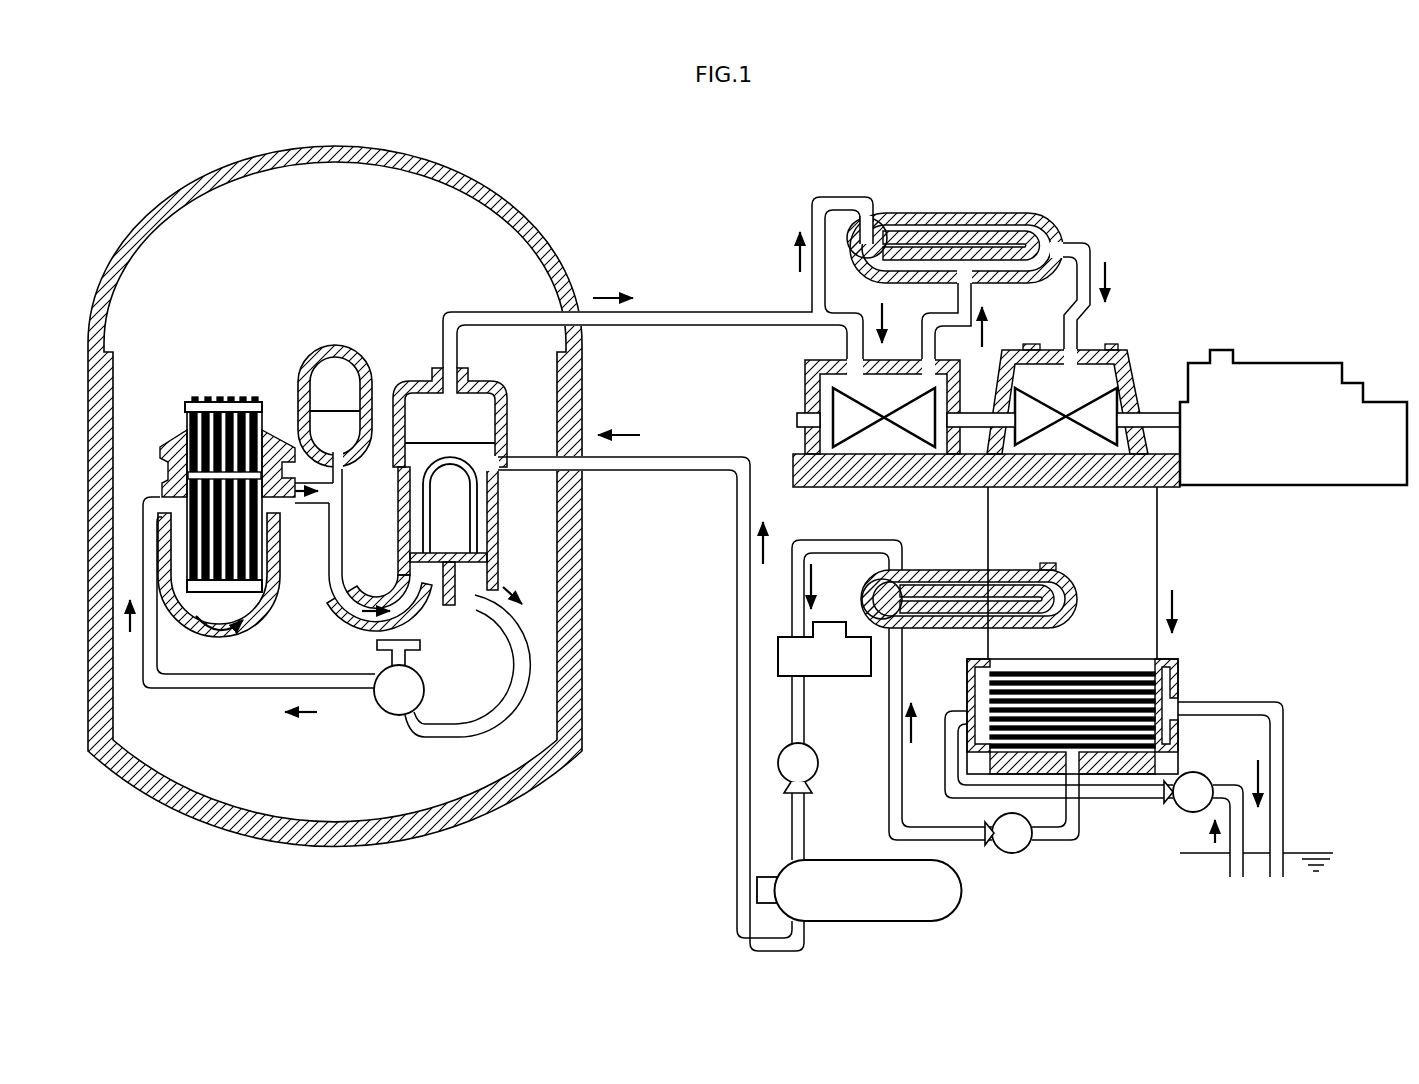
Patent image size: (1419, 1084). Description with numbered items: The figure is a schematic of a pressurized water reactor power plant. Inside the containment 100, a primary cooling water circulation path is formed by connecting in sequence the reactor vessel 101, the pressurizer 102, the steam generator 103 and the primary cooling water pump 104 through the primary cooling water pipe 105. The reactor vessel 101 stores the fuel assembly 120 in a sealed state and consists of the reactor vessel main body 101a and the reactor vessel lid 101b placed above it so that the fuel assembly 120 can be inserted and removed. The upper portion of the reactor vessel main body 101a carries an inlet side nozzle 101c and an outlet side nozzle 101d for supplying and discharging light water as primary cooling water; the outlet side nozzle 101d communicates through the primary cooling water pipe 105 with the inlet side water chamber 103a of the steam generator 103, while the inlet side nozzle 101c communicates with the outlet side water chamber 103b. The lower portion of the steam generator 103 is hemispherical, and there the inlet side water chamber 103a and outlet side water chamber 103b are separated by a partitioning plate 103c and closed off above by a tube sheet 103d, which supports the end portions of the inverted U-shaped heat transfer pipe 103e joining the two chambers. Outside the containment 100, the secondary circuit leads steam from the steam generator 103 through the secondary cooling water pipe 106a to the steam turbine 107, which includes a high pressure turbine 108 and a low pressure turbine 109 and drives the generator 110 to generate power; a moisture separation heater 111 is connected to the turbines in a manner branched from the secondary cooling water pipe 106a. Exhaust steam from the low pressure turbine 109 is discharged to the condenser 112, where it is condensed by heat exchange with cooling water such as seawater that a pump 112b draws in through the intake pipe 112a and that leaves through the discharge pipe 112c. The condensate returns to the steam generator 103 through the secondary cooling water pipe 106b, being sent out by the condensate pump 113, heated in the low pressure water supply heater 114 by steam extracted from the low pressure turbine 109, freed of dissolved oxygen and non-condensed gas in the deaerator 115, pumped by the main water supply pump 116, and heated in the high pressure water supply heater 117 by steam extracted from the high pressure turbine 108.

The containment 100 is at (184, 183).
The reactor vessel 101 is at (225, 510).
The reactor vessel main body 101a is at (231, 633).
The reactor vessel lid 101b is at (273, 432).
The inlet side nozzle 101c is at (166, 497).
The outlet side nozzle 101d is at (272, 560).
The fuel assembly 120 is at (268, 613).
The pressurizer 102 is at (332, 345).
The steam generator 103 is at (431, 499).
The inlet side water chamber 103a is at (400, 612).
The outlet side water chamber 103b is at (470, 582).
The partitioning plate 103c is at (446, 613).
The tube sheet 103d is at (430, 510).
The heat transfer pipe 103e is at (455, 462).
The primary cooling water pump 104 is at (382, 714).
The primary cooling water pipe 105 is at (343, 518).
The secondary cooling water pipe 106a is at (706, 311).
The secondary cooling water pipe 106b is at (737, 845).
The steam turbine 107 is at (797, 406).
The high pressure turbine 108 is at (822, 355).
The low pressure turbine 109 is at (1125, 352).
The generator 110 is at (1360, 370).
The moisture separation heater 111 is at (915, 207).
The condenser 112 is at (1157, 553).
The intake pipe 112a is at (947, 700).
The pump 112b is at (1195, 772).
The discharge pipe 112c is at (1283, 740).
The condensate pump 113 is at (1030, 850).
The low pressure water supply heater 114 is at (930, 570).
The deaerator 115 is at (830, 622).
The main water supply pump 116 is at (815, 752).
The high pressure water supply heater 117 is at (838, 860).